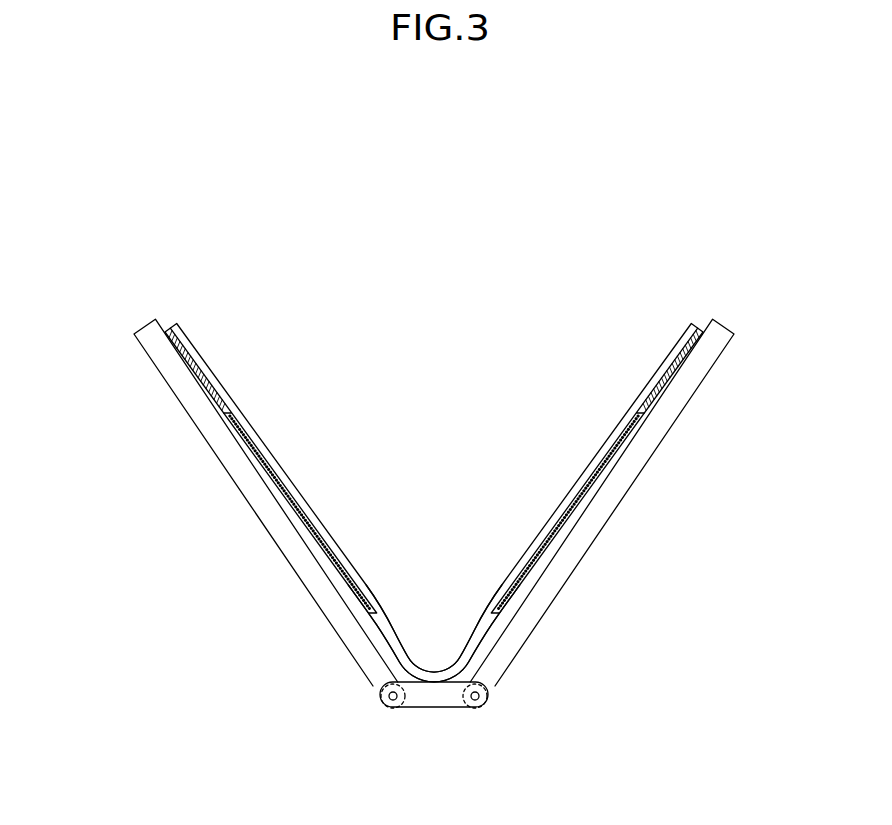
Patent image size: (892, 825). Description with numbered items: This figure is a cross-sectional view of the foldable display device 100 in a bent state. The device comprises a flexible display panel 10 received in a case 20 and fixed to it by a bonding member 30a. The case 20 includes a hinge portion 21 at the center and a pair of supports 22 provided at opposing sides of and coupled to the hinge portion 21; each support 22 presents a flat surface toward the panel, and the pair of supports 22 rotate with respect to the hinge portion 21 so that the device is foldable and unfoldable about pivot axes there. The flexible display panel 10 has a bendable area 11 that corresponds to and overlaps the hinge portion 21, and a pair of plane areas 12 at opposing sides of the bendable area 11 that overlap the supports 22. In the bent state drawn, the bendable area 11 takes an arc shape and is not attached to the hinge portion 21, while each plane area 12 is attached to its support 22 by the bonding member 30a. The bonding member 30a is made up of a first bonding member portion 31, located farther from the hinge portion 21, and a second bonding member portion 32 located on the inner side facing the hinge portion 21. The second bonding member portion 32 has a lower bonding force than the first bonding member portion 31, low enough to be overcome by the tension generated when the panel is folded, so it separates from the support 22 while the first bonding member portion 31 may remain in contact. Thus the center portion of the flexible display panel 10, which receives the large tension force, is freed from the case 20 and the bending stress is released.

The foldable display device 100 is at (437, 409).
The flexible display panel 10 is at (629, 410).
The bendable area 11 is at (433, 672).
The plane area 12 is at (295, 497).
The case 20 is at (434, 735).
The hinge portion 21 is at (435, 694).
The support 22 is at (527, 766).
The bonding member 30a is at (435, 502).
The first bonding member portion 31 is at (190, 378).
The second bonding member portion 32 is at (241, 452).